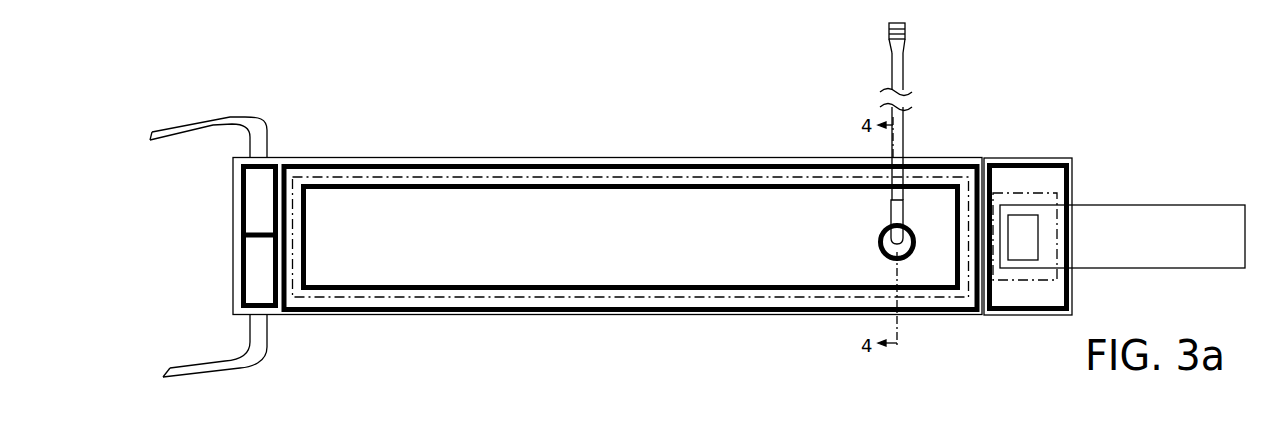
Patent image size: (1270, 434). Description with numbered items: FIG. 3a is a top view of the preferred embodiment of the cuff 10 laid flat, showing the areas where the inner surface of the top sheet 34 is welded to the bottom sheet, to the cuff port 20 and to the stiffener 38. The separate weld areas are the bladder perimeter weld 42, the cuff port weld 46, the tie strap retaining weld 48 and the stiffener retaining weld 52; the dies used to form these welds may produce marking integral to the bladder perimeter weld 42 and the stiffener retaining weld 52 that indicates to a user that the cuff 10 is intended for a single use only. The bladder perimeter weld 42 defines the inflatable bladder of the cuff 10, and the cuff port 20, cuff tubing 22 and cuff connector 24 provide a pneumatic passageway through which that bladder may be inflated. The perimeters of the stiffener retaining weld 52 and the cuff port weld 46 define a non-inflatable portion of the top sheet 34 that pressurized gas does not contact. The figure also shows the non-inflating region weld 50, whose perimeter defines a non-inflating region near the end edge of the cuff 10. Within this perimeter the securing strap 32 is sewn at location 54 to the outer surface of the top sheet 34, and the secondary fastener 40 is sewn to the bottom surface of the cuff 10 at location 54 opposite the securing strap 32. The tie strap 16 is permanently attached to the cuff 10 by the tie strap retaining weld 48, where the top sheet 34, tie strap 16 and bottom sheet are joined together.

The cuff 10 is at (697, 340).
The tie strap 16 is at (248, 117).
The cuff port 20 is at (903, 210).
The cuff tubing 22 is at (902, 135).
The cuff connector 24 is at (905, 48).
The securing strap 32 is at (1128, 205).
The top sheet 34 is at (535, 315).
The stiffener 38 is at (437, 177).
The secondary fastener 40 is at (1000, 193).
The bladder perimeter weld 42 is at (722, 163).
The cuff port weld 46 is at (878, 242).
The tie strap retaining weld 48 is at (275, 160).
The non-inflating region weld 50 is at (1048, 163).
The stiffener retaining weld 52 is at (552, 184).
The location 54 is at (1038, 243).